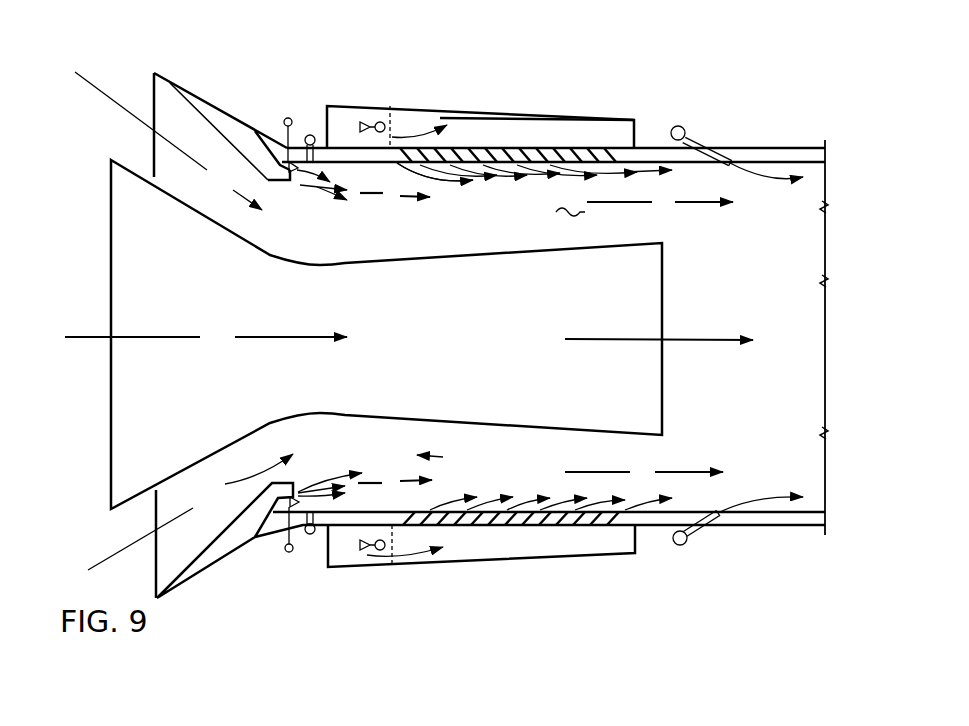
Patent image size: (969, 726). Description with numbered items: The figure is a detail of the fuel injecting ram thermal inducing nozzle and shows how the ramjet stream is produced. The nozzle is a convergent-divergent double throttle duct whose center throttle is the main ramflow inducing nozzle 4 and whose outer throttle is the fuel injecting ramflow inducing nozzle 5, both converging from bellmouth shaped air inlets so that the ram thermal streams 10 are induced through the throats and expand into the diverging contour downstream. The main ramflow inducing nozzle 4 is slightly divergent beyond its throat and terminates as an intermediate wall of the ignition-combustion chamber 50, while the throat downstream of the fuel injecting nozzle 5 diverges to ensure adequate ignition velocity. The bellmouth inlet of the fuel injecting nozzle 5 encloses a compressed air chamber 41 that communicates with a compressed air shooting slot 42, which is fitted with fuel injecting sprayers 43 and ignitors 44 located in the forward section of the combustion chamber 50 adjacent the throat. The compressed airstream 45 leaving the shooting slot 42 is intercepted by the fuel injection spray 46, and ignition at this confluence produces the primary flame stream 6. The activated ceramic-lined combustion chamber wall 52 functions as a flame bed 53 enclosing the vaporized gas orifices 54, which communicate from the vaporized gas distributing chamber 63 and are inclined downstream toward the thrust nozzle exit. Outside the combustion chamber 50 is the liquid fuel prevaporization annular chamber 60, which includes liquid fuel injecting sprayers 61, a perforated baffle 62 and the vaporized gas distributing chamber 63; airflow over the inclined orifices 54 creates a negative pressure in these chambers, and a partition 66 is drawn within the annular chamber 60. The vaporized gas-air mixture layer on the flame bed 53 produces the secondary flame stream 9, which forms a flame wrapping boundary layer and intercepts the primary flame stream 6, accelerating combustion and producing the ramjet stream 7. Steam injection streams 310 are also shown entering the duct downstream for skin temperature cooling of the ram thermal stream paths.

The main ramflow inducing nozzle 4 is at (110, 252).
The fuel injecting ramflow inducing nozzle 5 is at (150, 88).
The primary flame stream 6 is at (395, 339).
The ramjet stream 7 is at (649, 337).
The flame stream 9 is at (542, 168).
The ram thermal stream 10 is at (409, 321).
The compressed air chamber 41 is at (215, 120).
The compressed air shooting slot 42 is at (278, 205).
The fuel injecting sprayer 43 is at (290, 163).
The ignitor 44 is at (308, 133).
The compressed airstream 45 is at (314, 187).
The fuel injection spray 46 is at (340, 203).
The ignition-combustion chamber 50 is at (501, 336).
The combustion chamber wall 52 is at (401, 165).
The flame bed 53 is at (692, 165).
The vaporized gas orifice 54 is at (558, 148).
The liquid fuel prevaporization annular chamber 60 is at (342, 117).
The liquid fuel injecting sprayer 61 is at (363, 120).
The perforated baffle 62 is at (392, 137).
The vaporized gas distributing chamber 63 is at (478, 127).
The partition 66 is at (410, 120).
The steam injection stream 310 is at (686, 120).